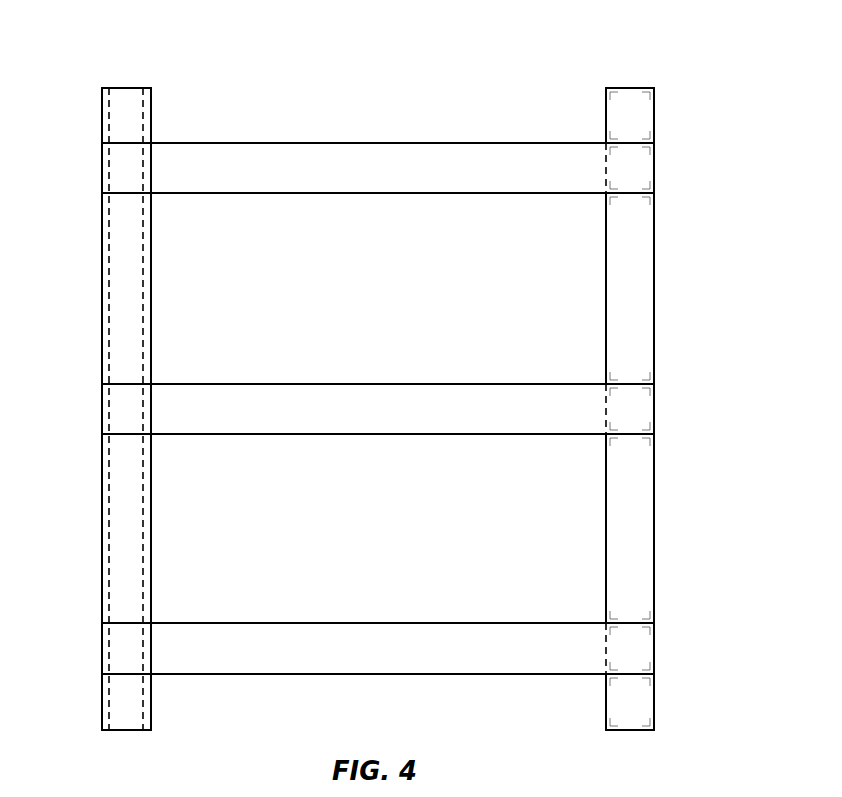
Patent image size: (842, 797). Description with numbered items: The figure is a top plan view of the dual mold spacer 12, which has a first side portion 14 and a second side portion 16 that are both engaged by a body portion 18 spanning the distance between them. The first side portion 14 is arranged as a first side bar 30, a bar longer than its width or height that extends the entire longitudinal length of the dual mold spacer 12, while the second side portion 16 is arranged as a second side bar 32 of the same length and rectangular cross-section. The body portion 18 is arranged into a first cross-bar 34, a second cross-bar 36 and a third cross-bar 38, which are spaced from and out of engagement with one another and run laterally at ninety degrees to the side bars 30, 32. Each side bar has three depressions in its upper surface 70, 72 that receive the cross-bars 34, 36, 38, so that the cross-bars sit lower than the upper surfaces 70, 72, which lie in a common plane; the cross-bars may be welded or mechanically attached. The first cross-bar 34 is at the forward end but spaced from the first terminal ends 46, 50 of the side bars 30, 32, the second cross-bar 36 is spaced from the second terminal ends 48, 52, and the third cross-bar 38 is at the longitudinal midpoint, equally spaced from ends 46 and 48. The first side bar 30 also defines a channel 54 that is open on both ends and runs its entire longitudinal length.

The dual mold spacer 12 is at (182, 42).
The first side portion 14 is at (123, 236).
The first side bar 30 is at (123, 236).
The second side portion 16 is at (643, 222).
The second side bar 32 is at (643, 222).
The body portion 18 is at (355, 182).
The first cross-bar 34 is at (270, 660).
The second cross-bar 36 is at (445, 182).
The third cross-bar 38 is at (390, 425).
The first terminal end of the first side bar 46 is at (120, 739).
The second terminal end of the first side bar 48 is at (120, 78).
The first terminal end of the second side bar 50 is at (618, 739).
The second terminal end of the second side bar 52 is at (618, 78).
The channel 54 is at (128, 508).
The upper surface of the first side bar 70 is at (122, 177).
The upper surface of the second side bar 72 is at (643, 328).